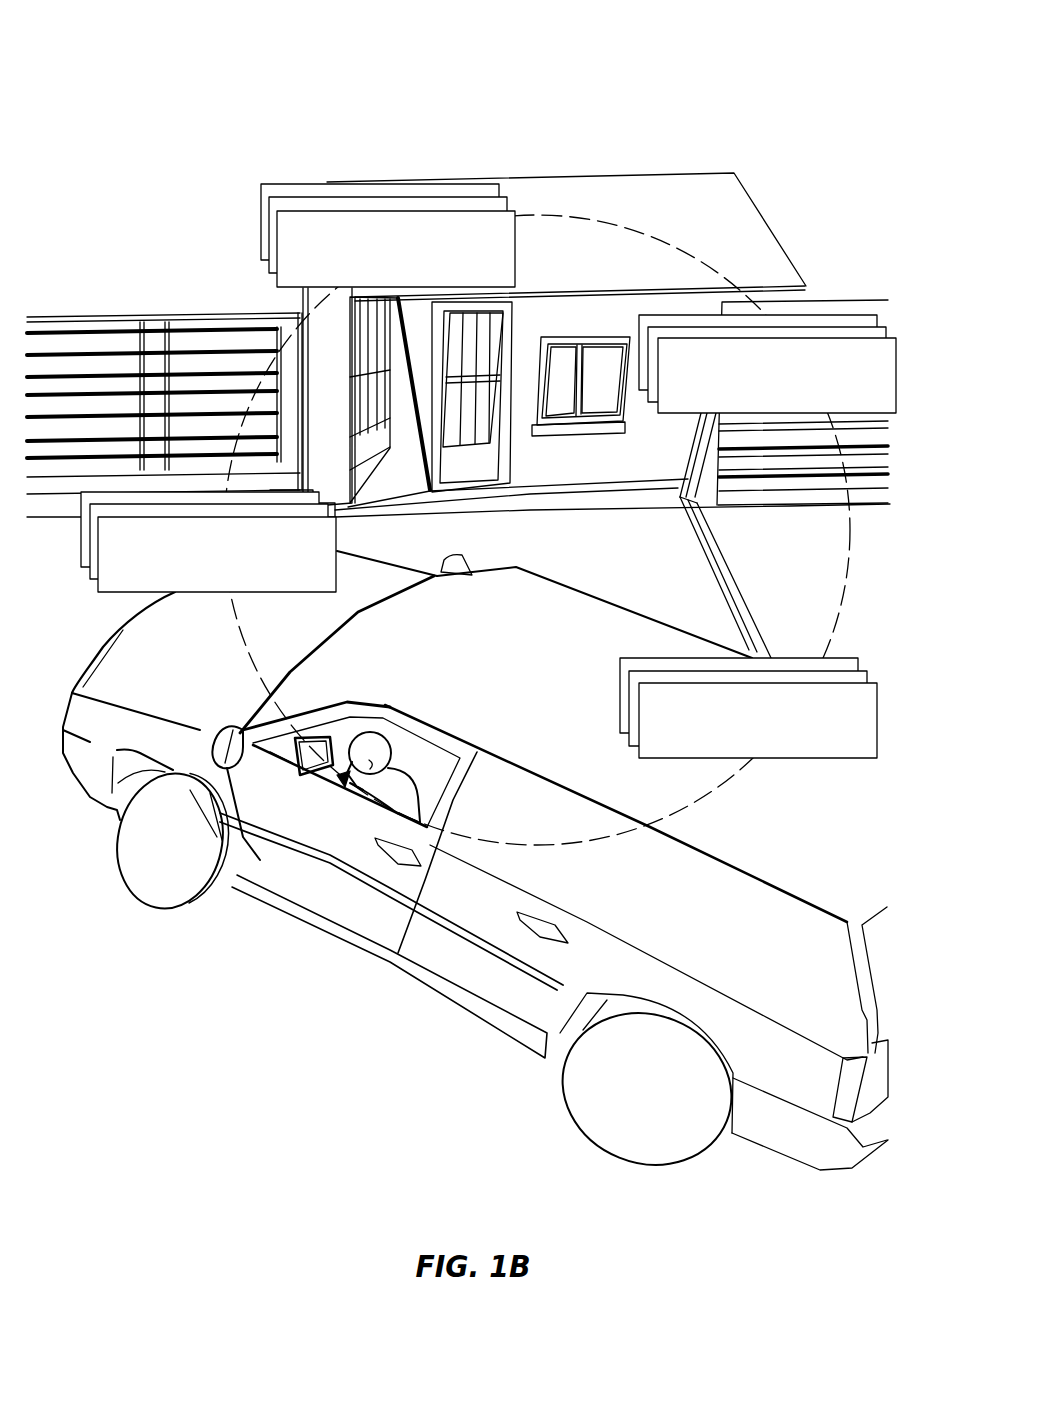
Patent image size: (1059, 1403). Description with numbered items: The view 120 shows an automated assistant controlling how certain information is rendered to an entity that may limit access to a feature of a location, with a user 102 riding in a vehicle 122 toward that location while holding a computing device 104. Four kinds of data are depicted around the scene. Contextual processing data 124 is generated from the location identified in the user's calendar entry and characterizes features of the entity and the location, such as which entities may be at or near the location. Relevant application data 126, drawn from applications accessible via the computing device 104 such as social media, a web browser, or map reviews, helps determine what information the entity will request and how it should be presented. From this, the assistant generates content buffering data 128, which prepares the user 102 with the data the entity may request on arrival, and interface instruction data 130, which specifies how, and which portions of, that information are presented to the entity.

The view 120 is at (150, 82).
The vehicle 122 is at (475, 870).
The user 102 is at (362, 733).
The computing device 104 is at (292, 748).
The contextual processing data 124 is at (203, 587).
The relevant application data 126 is at (382, 281).
The content buffering data 128 is at (763, 409).
The interface instruction data 130 is at (744, 753).